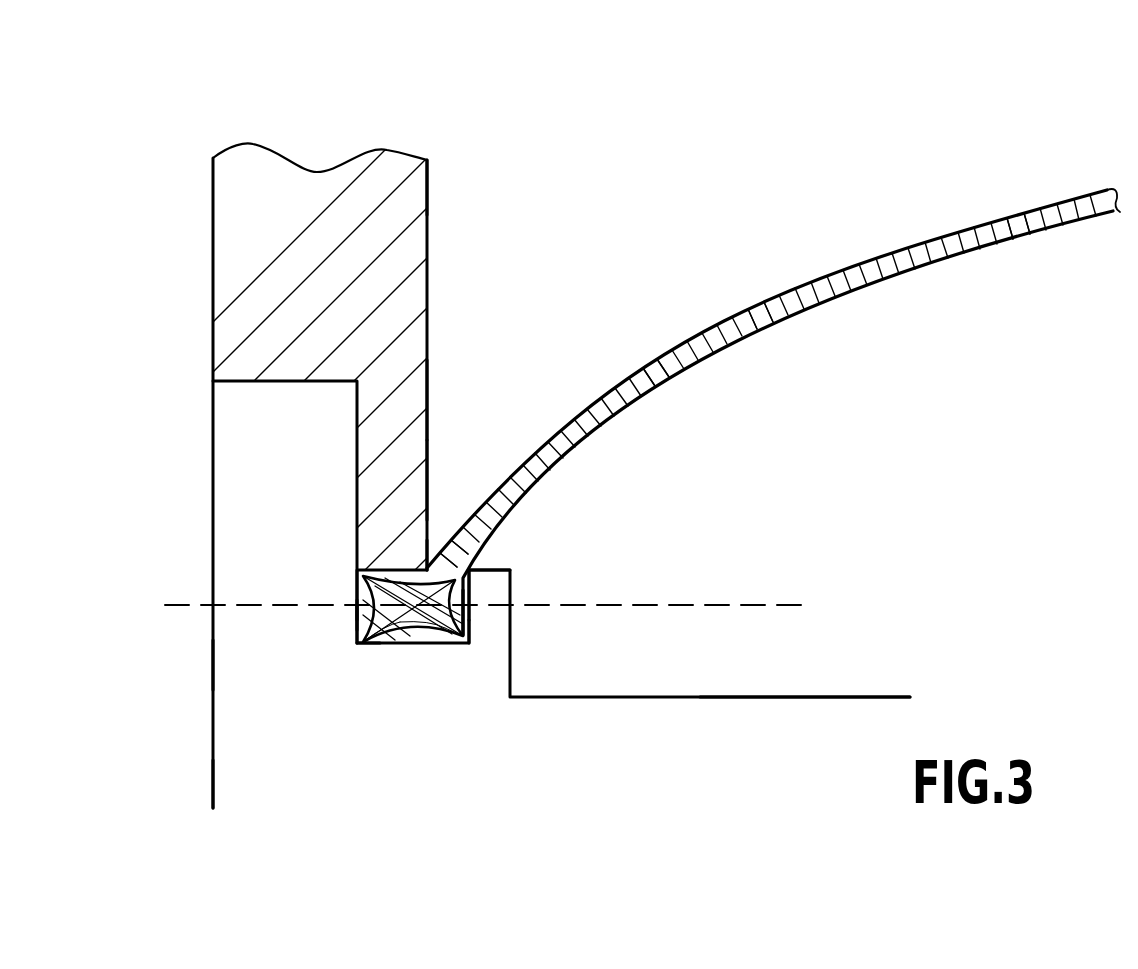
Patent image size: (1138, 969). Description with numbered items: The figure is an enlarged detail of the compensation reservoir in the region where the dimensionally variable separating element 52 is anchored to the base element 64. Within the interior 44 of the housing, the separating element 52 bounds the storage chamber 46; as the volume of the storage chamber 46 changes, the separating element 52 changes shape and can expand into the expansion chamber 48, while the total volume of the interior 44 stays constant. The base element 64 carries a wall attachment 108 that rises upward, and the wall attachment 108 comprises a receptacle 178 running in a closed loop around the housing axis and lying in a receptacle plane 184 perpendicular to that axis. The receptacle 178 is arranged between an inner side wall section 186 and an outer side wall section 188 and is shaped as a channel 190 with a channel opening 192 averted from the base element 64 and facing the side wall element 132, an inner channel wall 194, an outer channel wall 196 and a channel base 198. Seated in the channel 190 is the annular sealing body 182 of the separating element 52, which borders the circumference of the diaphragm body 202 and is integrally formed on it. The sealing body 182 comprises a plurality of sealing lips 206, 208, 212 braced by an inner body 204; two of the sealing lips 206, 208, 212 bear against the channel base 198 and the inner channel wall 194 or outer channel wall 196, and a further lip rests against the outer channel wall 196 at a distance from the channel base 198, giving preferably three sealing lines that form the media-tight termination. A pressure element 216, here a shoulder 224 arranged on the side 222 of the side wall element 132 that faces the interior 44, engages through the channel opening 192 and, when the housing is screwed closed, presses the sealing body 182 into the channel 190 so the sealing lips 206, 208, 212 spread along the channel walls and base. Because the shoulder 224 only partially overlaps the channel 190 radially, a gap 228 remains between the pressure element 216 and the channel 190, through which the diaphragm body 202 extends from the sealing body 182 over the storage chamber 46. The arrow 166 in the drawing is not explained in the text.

The interior 44 is at (1012, 135).
The storage chamber 46 is at (1005, 502).
The expansion chamber 48 is at (795, 150).
The separating element 52 is at (903, 260).
The base element 64 is at (292, 776).
The wall attachment 108 is at (252, 665).
The side wall element 132 is at (233, 270).
The sealing direction 166 is at (315, 583).
The receptacle 178 is at (412, 648).
The sealing body 182 is at (456, 598).
The receptacle plane 184 is at (778, 602).
The inner side wall section 186 is at (483, 583).
The outer side wall section 188 is at (246, 533).
The channel 190 is at (436, 647).
The channel opening 192 is at (433, 550).
The inner channel wall 194 is at (497, 572).
The outer channel wall 196 is at (357, 616).
The channel base 198 is at (388, 646).
The diaphragm body 202 is at (660, 365).
The inner body 204 is at (478, 648).
The sealing lip 206 is at (455, 647).
The sealing lip 208 is at (360, 650).
The sealing lip 212 is at (358, 578).
The pressure element 216 is at (445, 422).
The side 222 is at (427, 208).
The shoulder 224 is at (407, 400).
The gap 228 is at (470, 500).